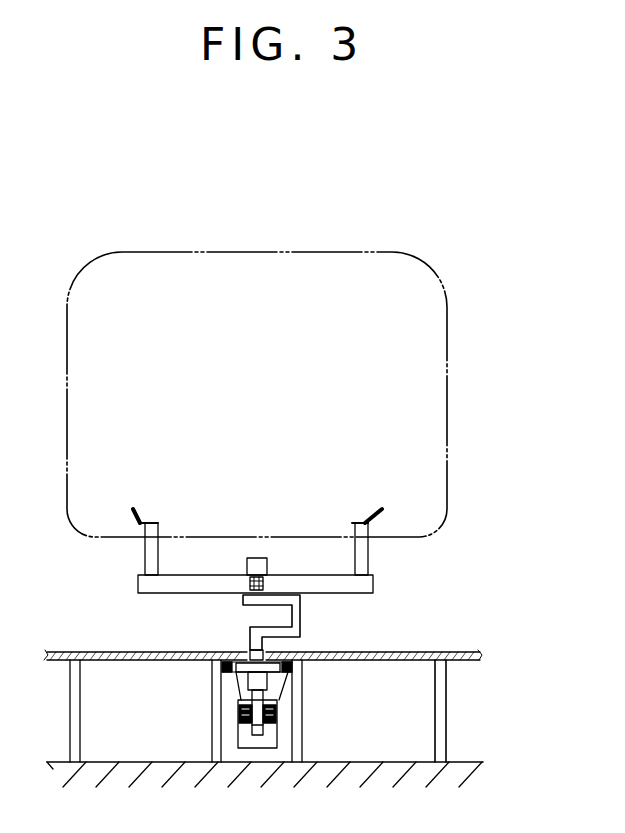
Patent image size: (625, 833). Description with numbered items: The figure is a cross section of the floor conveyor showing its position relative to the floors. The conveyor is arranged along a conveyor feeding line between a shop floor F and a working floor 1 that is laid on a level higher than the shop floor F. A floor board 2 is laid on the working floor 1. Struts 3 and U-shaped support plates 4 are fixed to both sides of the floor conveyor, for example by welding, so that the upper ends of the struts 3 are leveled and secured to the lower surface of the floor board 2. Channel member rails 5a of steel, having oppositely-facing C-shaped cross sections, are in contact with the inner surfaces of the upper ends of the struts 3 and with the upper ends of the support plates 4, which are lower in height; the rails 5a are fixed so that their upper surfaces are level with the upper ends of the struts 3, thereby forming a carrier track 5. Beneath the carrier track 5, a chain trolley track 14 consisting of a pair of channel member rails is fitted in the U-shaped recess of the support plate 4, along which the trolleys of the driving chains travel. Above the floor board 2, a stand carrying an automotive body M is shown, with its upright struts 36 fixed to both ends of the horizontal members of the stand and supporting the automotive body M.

The automotive body M is at (213, 252).
The upright struts 36 is at (370, 560).
The floor board 2 is at (455, 652).
The working floor 1 is at (397, 660).
The struts 3 is at (297, 695).
The shop floor F is at (465, 760).
The carrier track 5 is at (228, 680).
The channel member rails 5a is at (291, 678).
The U-shaped support plates 4 is at (287, 718).
The chain trolley track 14 is at (240, 722).